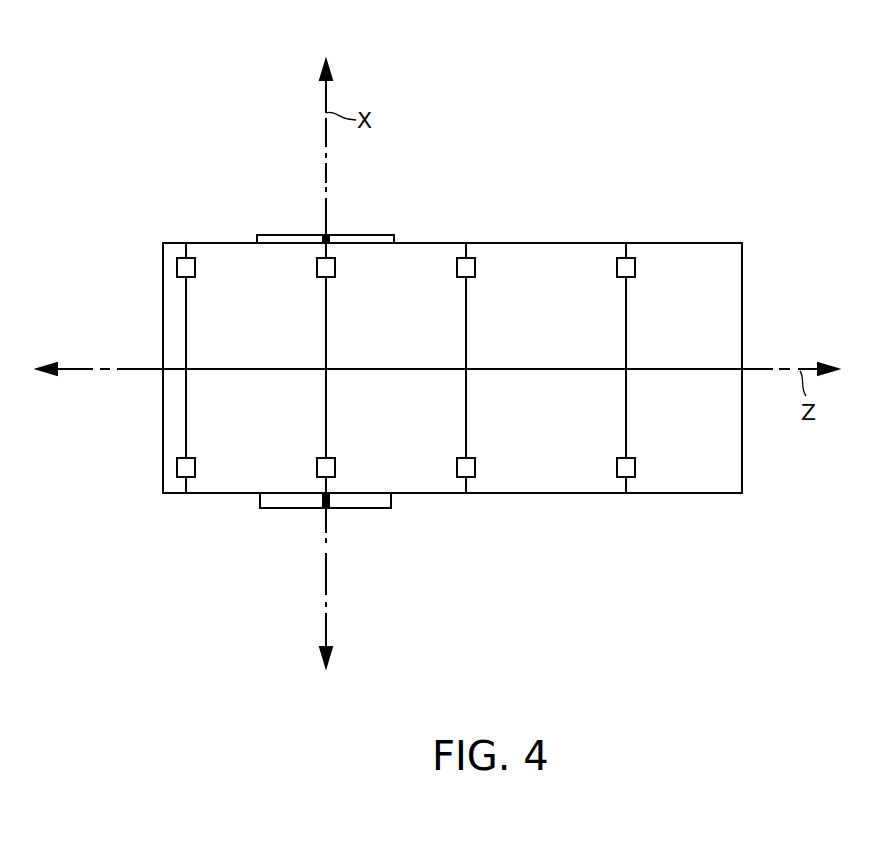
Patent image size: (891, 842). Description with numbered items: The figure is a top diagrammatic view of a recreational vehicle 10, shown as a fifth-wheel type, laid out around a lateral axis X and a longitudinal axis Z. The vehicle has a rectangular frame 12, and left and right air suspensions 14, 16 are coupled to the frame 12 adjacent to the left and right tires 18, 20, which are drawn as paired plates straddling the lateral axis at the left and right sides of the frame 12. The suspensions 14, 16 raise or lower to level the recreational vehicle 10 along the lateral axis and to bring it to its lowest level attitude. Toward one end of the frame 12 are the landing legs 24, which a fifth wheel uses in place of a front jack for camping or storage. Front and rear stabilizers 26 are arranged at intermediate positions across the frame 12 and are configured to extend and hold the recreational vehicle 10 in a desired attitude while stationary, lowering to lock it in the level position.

The recreational vehicle 10 is at (522, 92).
The frame 12 is at (408, 242).
The left air suspension 14 is at (316, 268).
The right air suspension 16 is at (316, 468).
The left tire 18 is at (290, 234).
The right tire 20 is at (296, 510).
The landing legs 24 is at (625, 257).
The stabilizers 26 is at (185, 257).